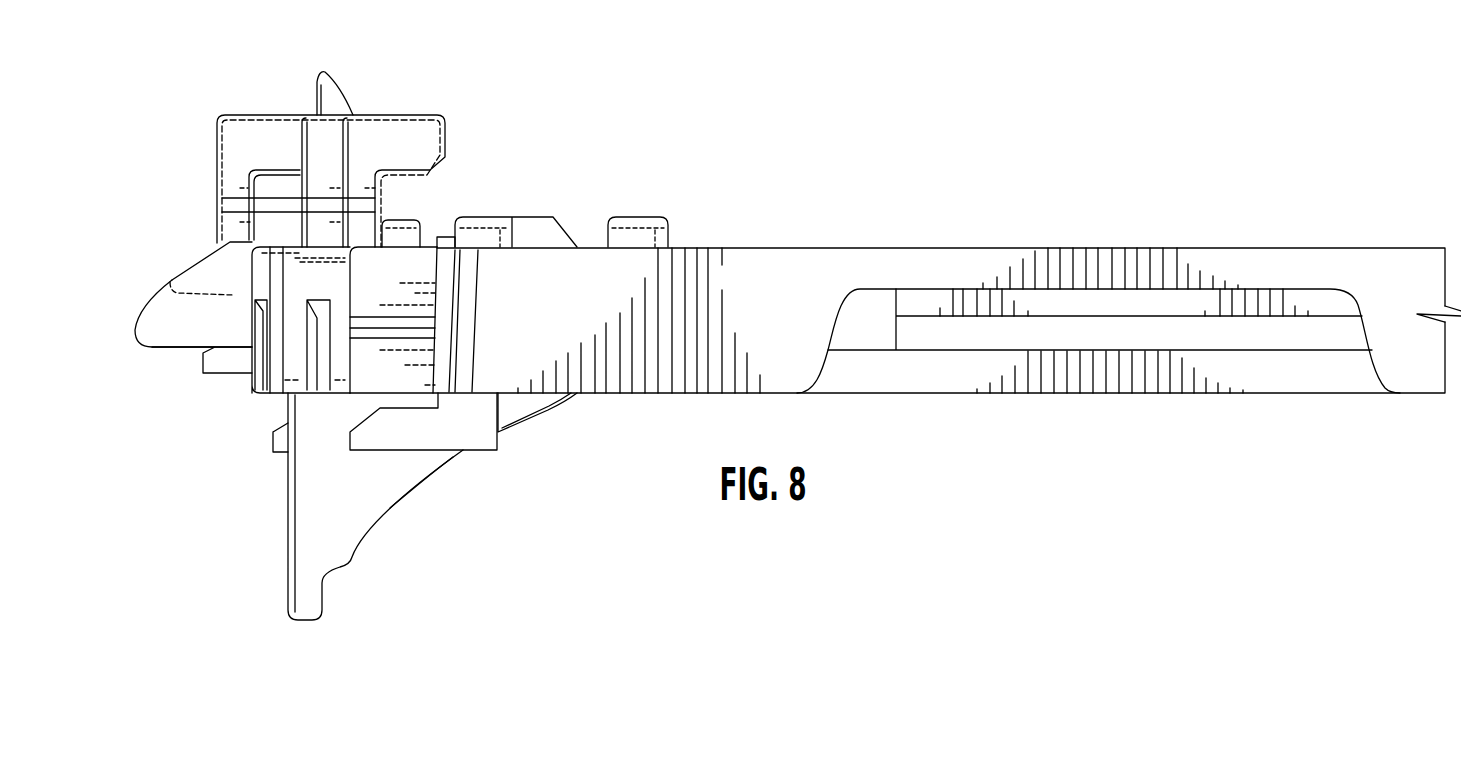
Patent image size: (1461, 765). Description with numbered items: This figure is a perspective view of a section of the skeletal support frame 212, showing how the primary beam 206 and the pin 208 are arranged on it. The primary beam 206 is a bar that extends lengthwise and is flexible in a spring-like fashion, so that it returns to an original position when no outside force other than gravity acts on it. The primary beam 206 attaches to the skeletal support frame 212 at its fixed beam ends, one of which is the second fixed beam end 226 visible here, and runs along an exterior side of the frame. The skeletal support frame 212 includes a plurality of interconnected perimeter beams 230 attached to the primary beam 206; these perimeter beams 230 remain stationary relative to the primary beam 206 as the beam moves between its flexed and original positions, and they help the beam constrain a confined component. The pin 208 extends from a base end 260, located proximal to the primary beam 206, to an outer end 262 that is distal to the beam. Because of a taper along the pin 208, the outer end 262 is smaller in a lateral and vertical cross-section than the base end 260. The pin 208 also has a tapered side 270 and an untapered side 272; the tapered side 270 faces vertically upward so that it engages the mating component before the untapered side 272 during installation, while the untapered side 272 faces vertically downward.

The skeletal support frame 212 is at (795, 208).
The perimeter beams 230 is at (944, 268).
The primary beam 206 is at (382, 268).
The base end 260 is at (245, 281).
The tapered side 270 is at (175, 262).
The outer end 262 is at (128, 315).
The untapered side 272 is at (176, 358).
The pin 208 is at (237, 338).
The second fixed beam end 226 is at (487, 378).